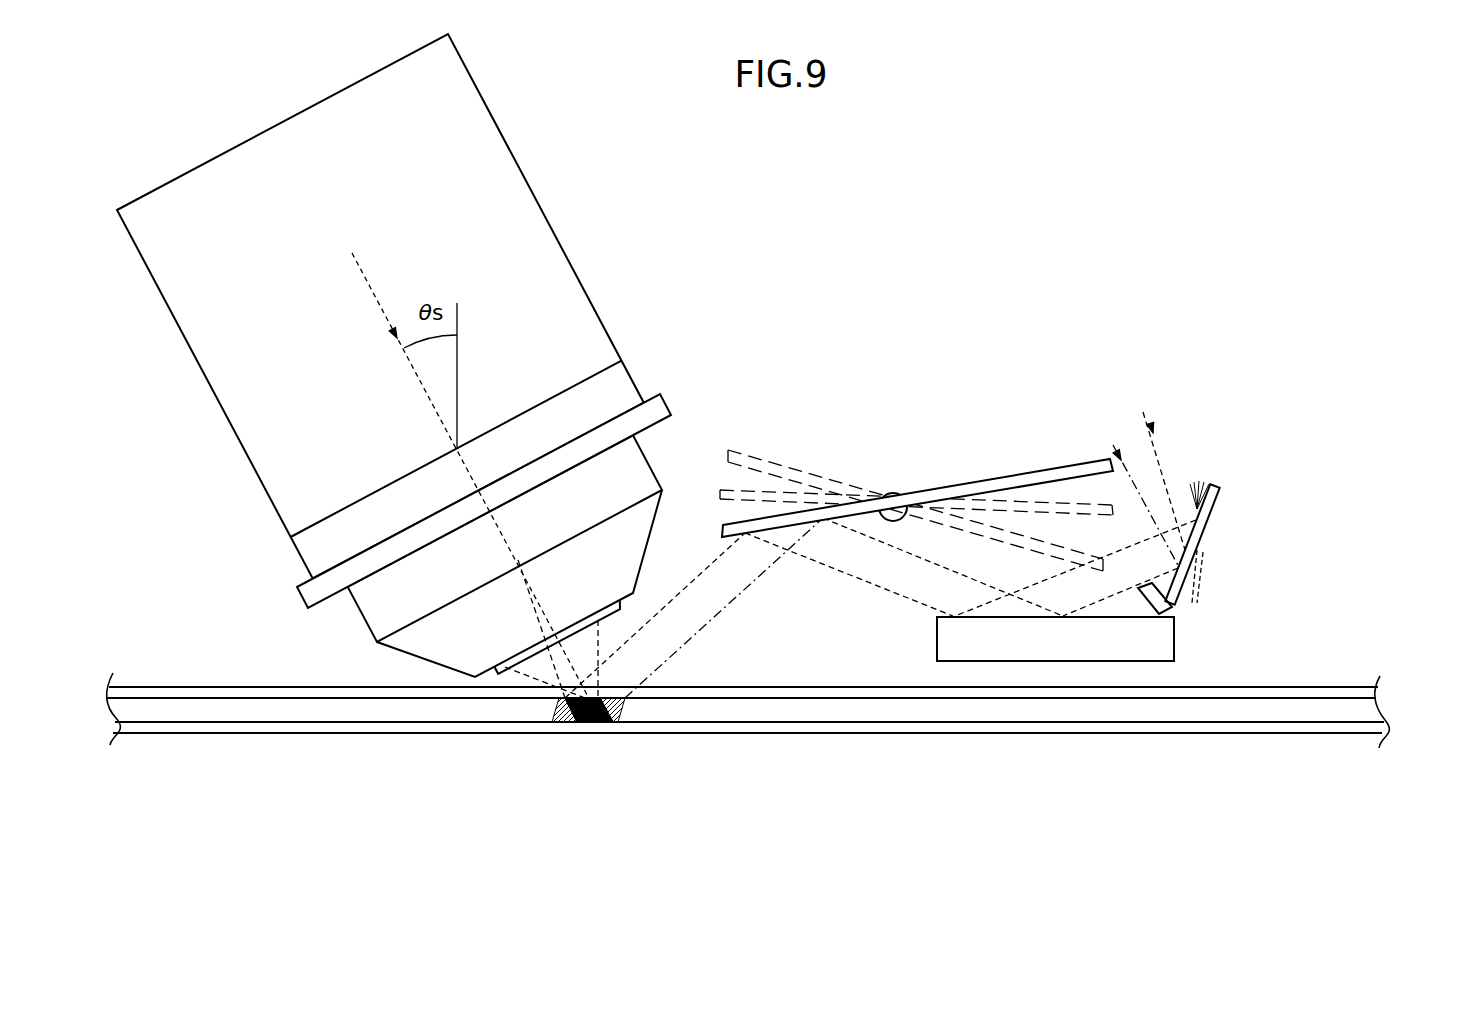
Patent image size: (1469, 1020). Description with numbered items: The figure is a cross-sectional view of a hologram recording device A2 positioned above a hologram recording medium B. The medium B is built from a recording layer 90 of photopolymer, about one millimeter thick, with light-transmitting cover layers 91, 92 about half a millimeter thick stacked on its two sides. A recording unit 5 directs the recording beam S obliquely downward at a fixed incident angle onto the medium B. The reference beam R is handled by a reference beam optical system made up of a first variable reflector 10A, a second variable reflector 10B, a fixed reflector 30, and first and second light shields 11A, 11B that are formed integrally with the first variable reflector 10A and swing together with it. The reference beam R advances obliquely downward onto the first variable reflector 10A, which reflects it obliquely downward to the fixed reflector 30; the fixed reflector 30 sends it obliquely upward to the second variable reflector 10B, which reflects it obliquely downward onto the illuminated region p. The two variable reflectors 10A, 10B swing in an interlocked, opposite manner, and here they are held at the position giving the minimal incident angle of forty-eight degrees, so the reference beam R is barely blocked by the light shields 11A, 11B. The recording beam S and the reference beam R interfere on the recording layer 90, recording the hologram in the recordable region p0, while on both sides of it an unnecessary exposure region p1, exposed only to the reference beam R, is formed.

The light emitting unit 5 is at (241, 443).
The recording beam S is at (368, 281).
The illuminated region p is at (602, 848).
The recordable region p0 is at (598, 722).
The unnecessary exposure region p1 is at (569, 722).
The second variable reflector 10B is at (1008, 477).
The first variable reflector 10A is at (1220, 511).
The first light shield 11A is at (1198, 482).
The second light shield 11B is at (1152, 600).
The fixed reflector 30 is at (1066, 643).
The reference beam R is at (1165, 442).
The recording layer 90 is at (1360, 712).
The cover layer 91 is at (1360, 697).
The cover layer 92 is at (1360, 732).
The hologram recording medium B is at (1321, 760).
The hologram recording device A2 is at (1054, 206).